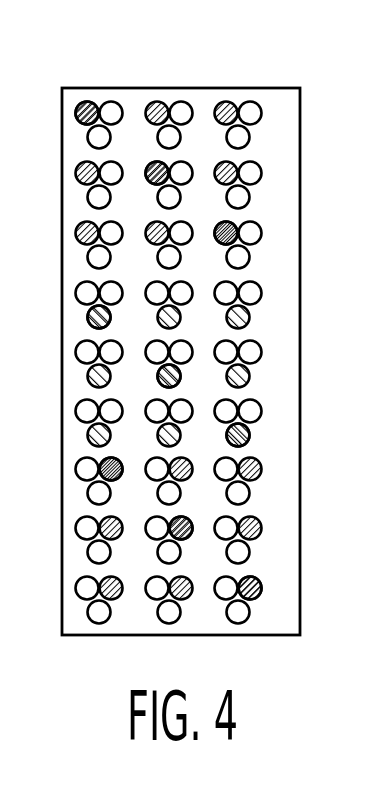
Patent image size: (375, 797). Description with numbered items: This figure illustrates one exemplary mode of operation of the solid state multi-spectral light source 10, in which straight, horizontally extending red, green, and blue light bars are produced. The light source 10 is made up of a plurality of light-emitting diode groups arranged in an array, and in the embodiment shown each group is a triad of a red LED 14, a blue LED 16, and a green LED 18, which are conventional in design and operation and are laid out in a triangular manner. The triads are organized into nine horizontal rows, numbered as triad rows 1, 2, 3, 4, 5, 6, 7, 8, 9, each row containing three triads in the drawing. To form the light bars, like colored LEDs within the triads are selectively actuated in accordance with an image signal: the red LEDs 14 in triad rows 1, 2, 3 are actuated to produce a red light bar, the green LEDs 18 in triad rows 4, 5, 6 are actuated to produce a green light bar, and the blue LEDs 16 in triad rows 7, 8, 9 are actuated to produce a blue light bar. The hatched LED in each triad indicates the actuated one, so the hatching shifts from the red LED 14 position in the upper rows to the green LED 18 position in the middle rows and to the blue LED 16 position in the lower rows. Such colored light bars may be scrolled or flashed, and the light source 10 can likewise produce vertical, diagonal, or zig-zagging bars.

The solid state multi-spectral light source 10 is at (219, 58).
The triad row 1 is at (201, 123).
The triad row 2 is at (201, 183).
The triad row 3 is at (201, 243).
The triad row 4 is at (201, 303).
The triad row 5 is at (201, 362).
The triad row 6 is at (201, 421).
The triad row 7 is at (201, 479).
The triad row 8 is at (201, 538).
The triad row 9 is at (201, 598).
The red LED 14 is at (76, 113).
The blue LED 16 is at (119, 477).
The green LED 18 is at (110, 321).